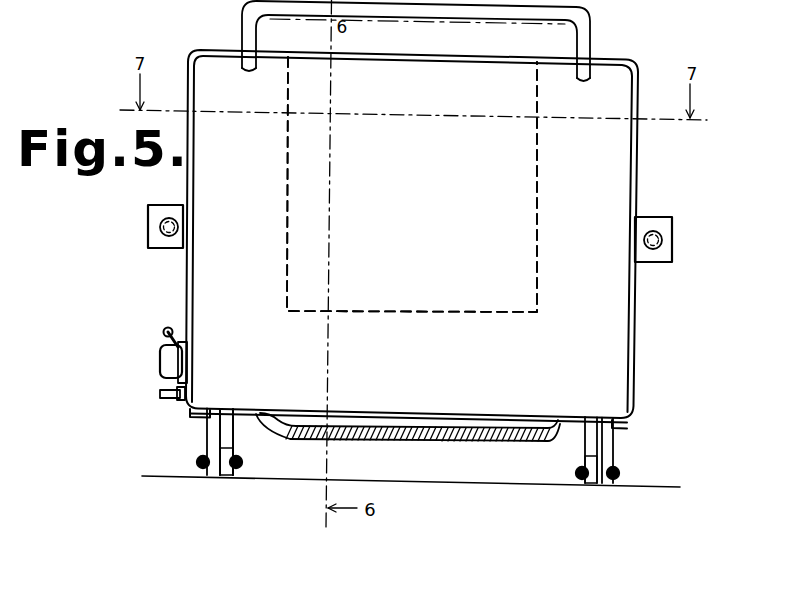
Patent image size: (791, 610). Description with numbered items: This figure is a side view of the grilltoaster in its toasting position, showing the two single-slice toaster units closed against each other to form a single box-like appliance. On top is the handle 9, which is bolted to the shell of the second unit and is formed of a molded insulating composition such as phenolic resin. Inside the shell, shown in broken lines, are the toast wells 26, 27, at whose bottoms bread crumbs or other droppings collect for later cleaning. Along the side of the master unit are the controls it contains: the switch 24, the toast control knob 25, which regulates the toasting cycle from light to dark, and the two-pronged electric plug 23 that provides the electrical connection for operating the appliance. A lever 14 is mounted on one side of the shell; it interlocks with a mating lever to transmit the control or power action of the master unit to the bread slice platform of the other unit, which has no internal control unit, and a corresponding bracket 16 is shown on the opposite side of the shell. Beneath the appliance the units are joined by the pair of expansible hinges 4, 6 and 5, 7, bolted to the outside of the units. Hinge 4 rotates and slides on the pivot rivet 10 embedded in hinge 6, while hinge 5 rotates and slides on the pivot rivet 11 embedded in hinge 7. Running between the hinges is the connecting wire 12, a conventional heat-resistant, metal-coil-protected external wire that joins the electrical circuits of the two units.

The expansible hinge 4 is at (234, 440).
The expansible hinge 5 is at (585, 449).
The expansible hinge 6 is at (207, 440).
The expansible hinge 7 is at (613, 449).
The handle 9 is at (405, 10).
The pivot rivet 10 is at (243, 462).
The pivot rivet 11 is at (576, 471).
The connecting wire 12 is at (404, 441).
The lever 14 is at (170, 206).
The mounting bracket 16 is at (655, 218).
The electric plug 23 is at (160, 393).
The switch 24 is at (163, 332).
The toast control knob 25 is at (160, 361).
The toast well 26 is at (415, 300).
The toast well 27 is at (412, 184).